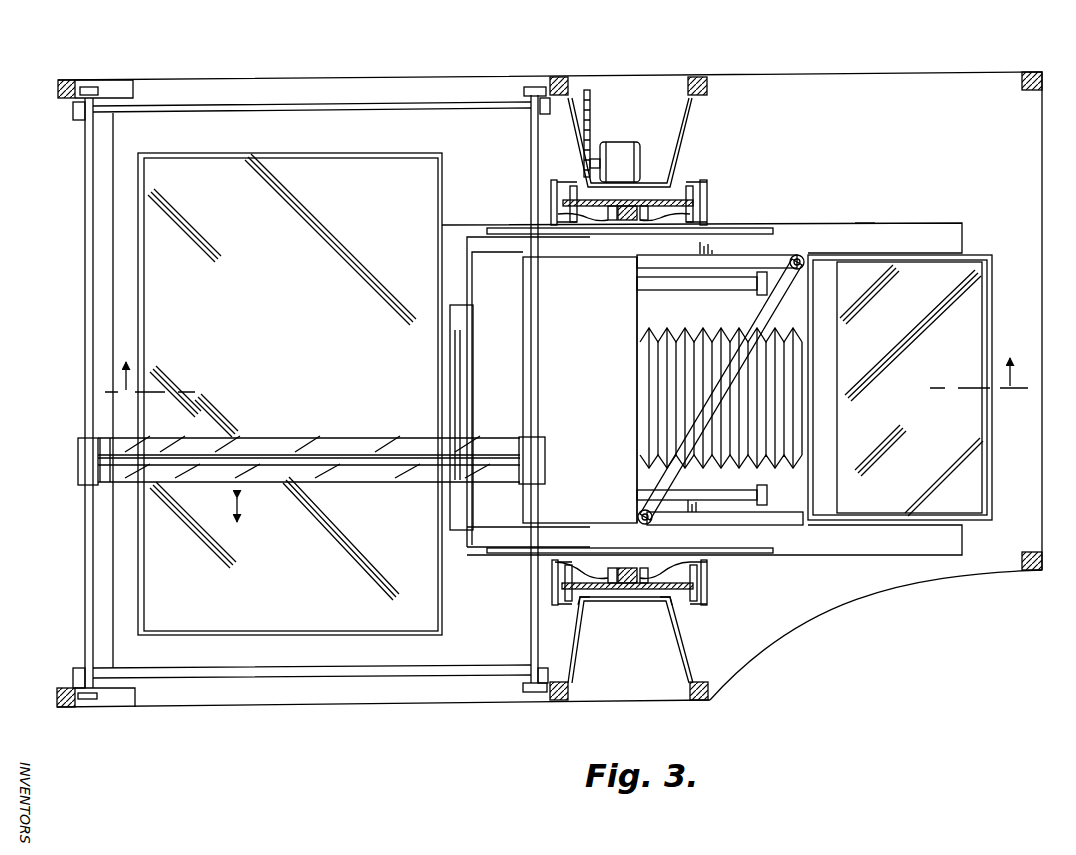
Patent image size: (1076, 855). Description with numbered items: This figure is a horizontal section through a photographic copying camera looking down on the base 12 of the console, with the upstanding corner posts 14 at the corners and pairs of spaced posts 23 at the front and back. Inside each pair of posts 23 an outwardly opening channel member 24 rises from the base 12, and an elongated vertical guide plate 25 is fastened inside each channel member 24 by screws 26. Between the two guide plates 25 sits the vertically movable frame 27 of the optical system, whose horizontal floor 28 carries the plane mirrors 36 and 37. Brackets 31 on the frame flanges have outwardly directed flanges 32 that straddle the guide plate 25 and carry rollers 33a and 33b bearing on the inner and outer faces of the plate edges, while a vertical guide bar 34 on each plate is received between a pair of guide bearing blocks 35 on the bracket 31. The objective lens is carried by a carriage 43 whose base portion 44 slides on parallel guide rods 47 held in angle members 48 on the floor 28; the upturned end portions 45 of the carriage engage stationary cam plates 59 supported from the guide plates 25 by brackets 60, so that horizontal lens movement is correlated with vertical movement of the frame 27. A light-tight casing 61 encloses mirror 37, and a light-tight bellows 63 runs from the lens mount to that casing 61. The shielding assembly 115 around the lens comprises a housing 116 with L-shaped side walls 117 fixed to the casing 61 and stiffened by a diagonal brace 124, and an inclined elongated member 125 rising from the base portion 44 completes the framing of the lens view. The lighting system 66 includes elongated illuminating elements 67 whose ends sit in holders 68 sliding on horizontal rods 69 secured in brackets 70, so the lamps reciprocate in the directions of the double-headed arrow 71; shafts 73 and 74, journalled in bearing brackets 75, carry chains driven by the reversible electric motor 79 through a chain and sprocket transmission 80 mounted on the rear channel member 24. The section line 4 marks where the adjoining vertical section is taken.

The section line 4- 4 is at (566, 362).
The base 12 is at (1042, 492).
The corner posts 14 is at (60, 96).
The posts 23 is at (560, 78).
The channel member 24 is at (686, 144).
The vertical guide plate 25 is at (668, 600).
The screws 26 is at (582, 603).
The frame 27 is at (863, 220).
The floor 28 is at (958, 236).
The brackets 31 is at (716, 199).
The flanges 32 is at (708, 190).
The rollers 33a is at (695, 208).
The rollers 33b is at (692, 184).
The vertical guide bar 34 is at (634, 204).
The guide bearing blocks 35 is at (610, 221).
The plane mirror 36 is at (330, 628).
The plane mirror 37 is at (935, 510).
The carriage 43 is at (495, 275).
The base portion 44 is at (480, 250).
The upturned end portions 45 is at (554, 540).
The guide rods 47 is at (690, 289).
The angle members 48 is at (742, 309).
The cam plates 59 is at (738, 233).
The brackets 60 is at (597, 564).
The light-tight casing 61 is at (882, 518).
The light-tight bellows 63 is at (652, 458).
The lighting system 66 is at (432, 488).
The elongated illuminating elements 67 is at (278, 465).
The holders 68 is at (78, 480).
The horizontal rods 69 is at (84, 355).
The brackets 70 is at (84, 86).
The double-headed arrows 71 is at (242, 512).
The shaft 73 is at (288, 103).
The shaft 74 is at (300, 688).
The bearing brackets 75 is at (74, 124).
The reversible electric motor 79 is at (620, 141).
The chain and sprocket transmission 80 is at (591, 125).
The shielding assembly 115 is at (570, 388).
The housing 116 is at (642, 339).
The L-shaped side walls 117 is at (688, 262).
The brace 124 is at (800, 256).
The inclined elongated member 125 is at (472, 374).